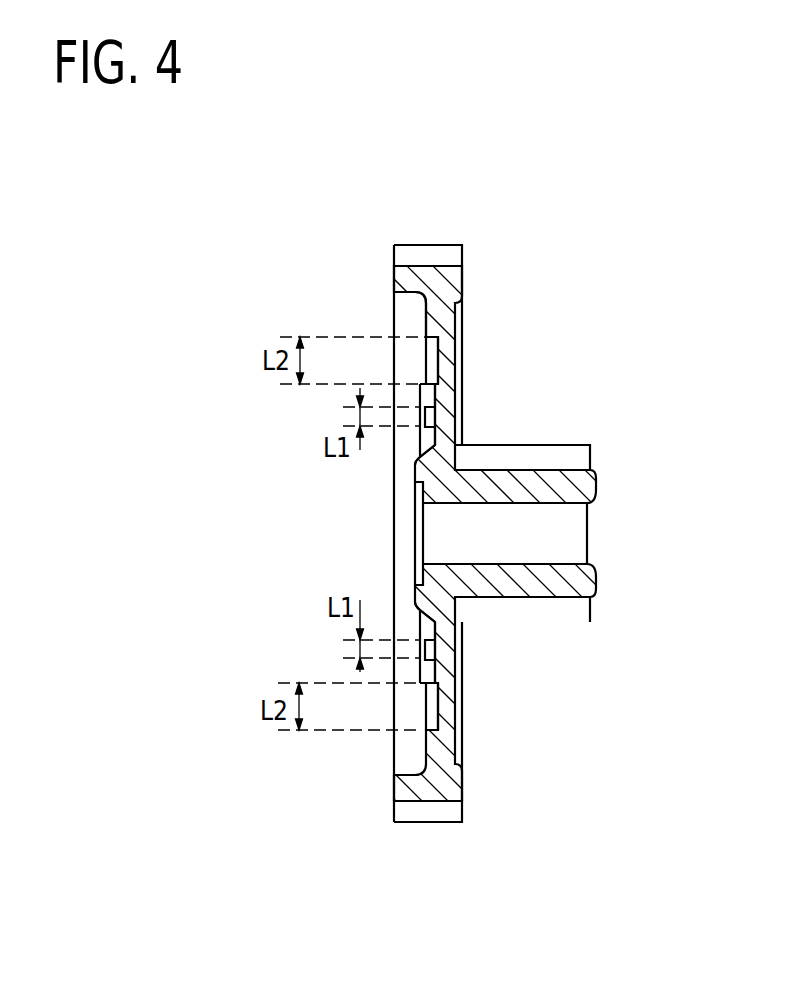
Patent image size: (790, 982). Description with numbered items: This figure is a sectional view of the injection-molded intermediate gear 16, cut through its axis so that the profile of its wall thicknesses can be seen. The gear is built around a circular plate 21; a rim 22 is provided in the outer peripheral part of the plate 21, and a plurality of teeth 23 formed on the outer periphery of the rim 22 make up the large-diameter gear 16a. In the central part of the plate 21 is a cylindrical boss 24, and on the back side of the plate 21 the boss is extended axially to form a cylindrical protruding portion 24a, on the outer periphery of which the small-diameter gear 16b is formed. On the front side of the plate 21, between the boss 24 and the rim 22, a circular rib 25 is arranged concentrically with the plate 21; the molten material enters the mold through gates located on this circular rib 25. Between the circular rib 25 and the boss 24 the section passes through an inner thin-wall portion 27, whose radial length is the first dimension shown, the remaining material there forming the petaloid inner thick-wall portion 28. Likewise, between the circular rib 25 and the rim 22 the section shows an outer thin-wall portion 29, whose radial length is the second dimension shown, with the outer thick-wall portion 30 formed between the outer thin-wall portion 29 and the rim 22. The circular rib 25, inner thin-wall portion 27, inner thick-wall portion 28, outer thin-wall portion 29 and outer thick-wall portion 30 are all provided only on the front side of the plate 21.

The intermediate gear 16 is at (627, 254).
The large-diameter gear 16a is at (442, 253).
The small-diameter gear 16b is at (518, 458).
The circular plate 21 is at (458, 315).
The rim 22 is at (402, 278).
The teeth 23 is at (404, 245).
The cylindrical boss 24 is at (415, 590).
The cylindrical protruding portion 24a is at (495, 587).
The circular rib 25 is at (418, 390).
The inner thin-wall portion 27 is at (428, 420).
The inner thick-wall portion 28 is at (418, 440).
The outer thin-wall portion 29 is at (431, 357).
The outer thick-wall portion 30 is at (431, 313).